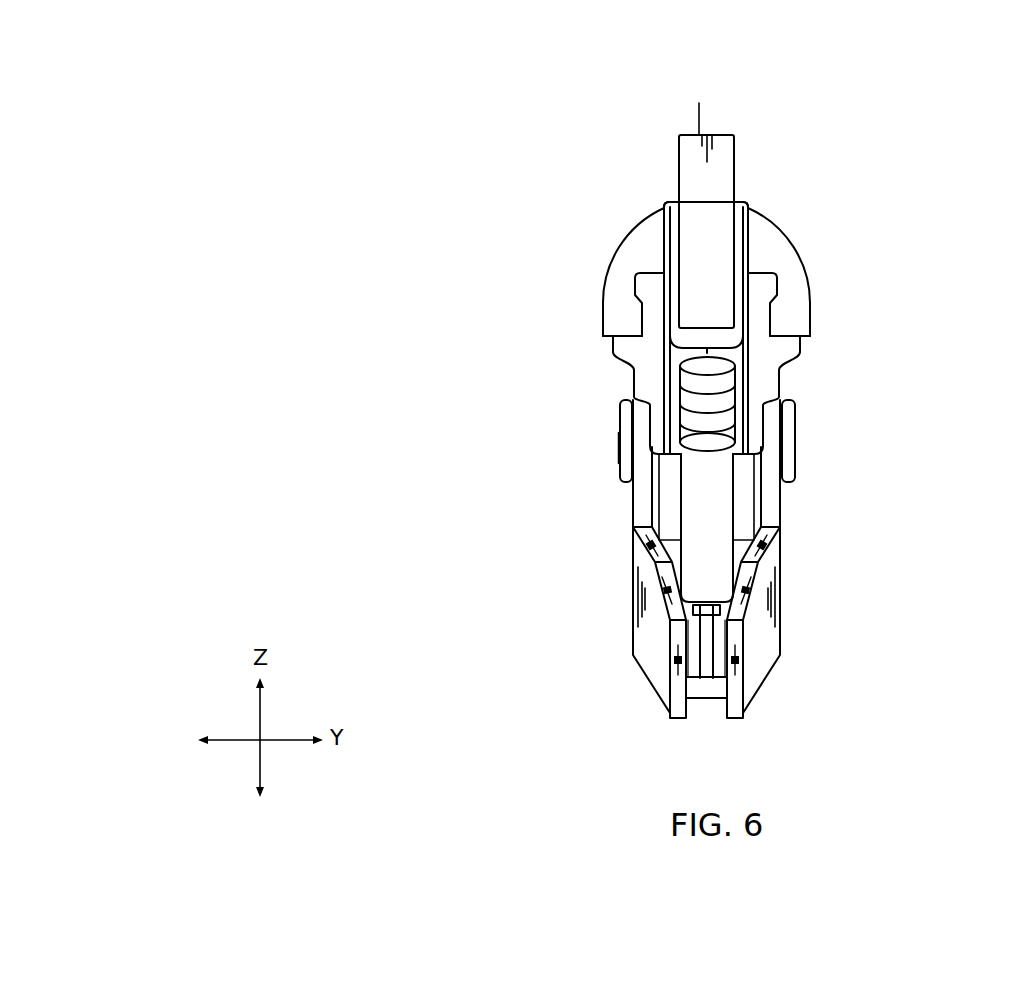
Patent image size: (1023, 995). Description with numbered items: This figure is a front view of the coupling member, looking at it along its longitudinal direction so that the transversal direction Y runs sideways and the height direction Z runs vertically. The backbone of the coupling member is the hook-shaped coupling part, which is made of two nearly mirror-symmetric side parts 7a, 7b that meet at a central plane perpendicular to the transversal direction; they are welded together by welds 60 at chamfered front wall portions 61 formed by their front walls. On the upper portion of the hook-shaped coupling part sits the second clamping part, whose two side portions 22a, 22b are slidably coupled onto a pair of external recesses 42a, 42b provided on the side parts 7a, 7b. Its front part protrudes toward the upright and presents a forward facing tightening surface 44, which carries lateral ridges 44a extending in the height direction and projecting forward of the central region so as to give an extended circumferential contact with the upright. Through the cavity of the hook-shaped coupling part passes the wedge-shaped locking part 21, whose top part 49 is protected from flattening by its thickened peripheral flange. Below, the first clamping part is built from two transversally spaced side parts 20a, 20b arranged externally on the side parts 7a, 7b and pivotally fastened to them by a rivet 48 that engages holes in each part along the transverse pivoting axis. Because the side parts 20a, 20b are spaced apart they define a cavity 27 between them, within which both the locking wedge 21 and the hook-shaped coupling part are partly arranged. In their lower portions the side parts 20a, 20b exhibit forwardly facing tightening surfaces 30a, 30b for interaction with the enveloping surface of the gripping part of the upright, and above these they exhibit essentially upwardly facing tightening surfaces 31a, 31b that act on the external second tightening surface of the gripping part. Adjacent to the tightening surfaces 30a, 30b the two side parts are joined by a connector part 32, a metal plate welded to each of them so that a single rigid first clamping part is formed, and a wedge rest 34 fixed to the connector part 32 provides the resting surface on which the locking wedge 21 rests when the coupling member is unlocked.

The top part 49 is at (699, 103).
The wedge-shaped locking part 21 is at (708, 505).
The forward facing tightening surface 44 is at (710, 226).
The lateral ridges 44a is at (738, 210).
The side portion 22a is at (783, 262).
The side portion 22b is at (633, 262).
The external recess 42a is at (808, 332).
The external recess 42b is at (616, 334).
The chamfered front wall portion 61 is at (738, 363).
The side part 7a is at (767, 380).
The side part 7b is at (653, 380).
The weld 60 is at (735, 406).
The rivet 48 is at (798, 453).
The upwardly facing tightening surface 31a is at (755, 550).
The upwardly facing tightening surface 31b is at (647, 548).
The side part 20a is at (763, 643).
The side part 20b is at (647, 642).
The wedge rest 34 is at (709, 644).
The forwardly facing tightening surface 30a is at (747, 707).
The forwardly facing tightening surface 30b is at (677, 707).
The cavity 27 is at (695, 655).
The connector part 32 is at (708, 687).